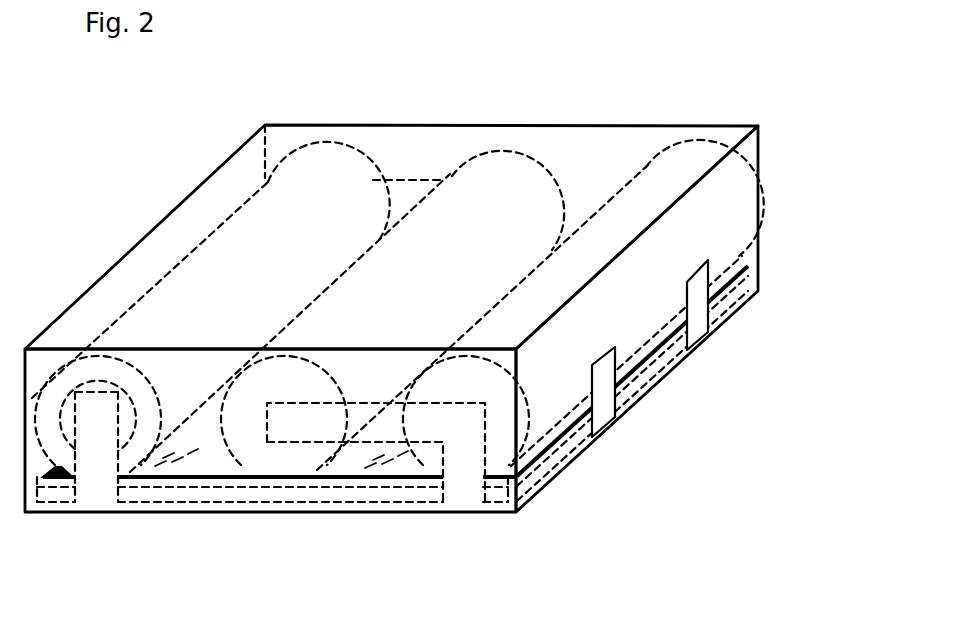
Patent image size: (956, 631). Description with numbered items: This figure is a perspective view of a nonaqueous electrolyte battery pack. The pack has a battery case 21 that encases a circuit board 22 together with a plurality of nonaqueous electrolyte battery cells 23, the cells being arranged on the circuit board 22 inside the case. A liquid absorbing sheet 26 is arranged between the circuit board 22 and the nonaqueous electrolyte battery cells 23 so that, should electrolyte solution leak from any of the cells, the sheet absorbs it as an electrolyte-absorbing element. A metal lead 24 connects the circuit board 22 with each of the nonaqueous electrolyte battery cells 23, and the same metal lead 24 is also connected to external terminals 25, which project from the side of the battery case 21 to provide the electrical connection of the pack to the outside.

The battery case 21 is at (758, 157).
The circuit board 22 is at (148, 493).
The nonaqueous electrolyte battery cells 23 is at (672, 165).
The metal lead 24 is at (300, 428).
The external terminals 25 is at (607, 420).
The liquid absorbing sheet 26 is at (229, 480).